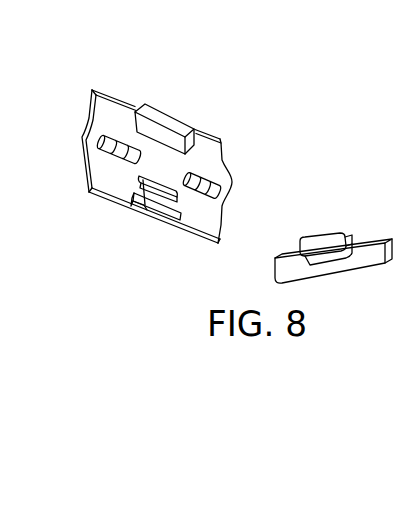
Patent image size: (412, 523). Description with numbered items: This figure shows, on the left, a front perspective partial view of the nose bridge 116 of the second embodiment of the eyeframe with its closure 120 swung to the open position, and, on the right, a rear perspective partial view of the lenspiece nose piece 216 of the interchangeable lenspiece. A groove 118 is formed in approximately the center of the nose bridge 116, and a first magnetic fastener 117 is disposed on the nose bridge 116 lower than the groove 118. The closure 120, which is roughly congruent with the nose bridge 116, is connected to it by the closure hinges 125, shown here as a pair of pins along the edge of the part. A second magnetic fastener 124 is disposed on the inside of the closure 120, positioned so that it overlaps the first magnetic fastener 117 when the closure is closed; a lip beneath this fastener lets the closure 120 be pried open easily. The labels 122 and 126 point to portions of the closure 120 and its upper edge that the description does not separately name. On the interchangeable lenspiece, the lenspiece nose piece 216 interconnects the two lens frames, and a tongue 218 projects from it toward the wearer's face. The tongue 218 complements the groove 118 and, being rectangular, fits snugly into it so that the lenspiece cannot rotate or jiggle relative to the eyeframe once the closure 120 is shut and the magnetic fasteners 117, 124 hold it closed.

The closure 120 is at (218, 108).
The plate body 122 is at (102, 110).
The second magnetic fastener 124 is at (173, 117).
The closure hinges 125 is at (223, 171).
The top flange 126 is at (120, 96).
The groove 118 is at (146, 203).
The first magnetic fastener 117 is at (168, 212).
The nose bridge 116 is at (204, 224).
The lenspiece nose piece 216 is at (366, 262).
The tongue 218 is at (325, 241).